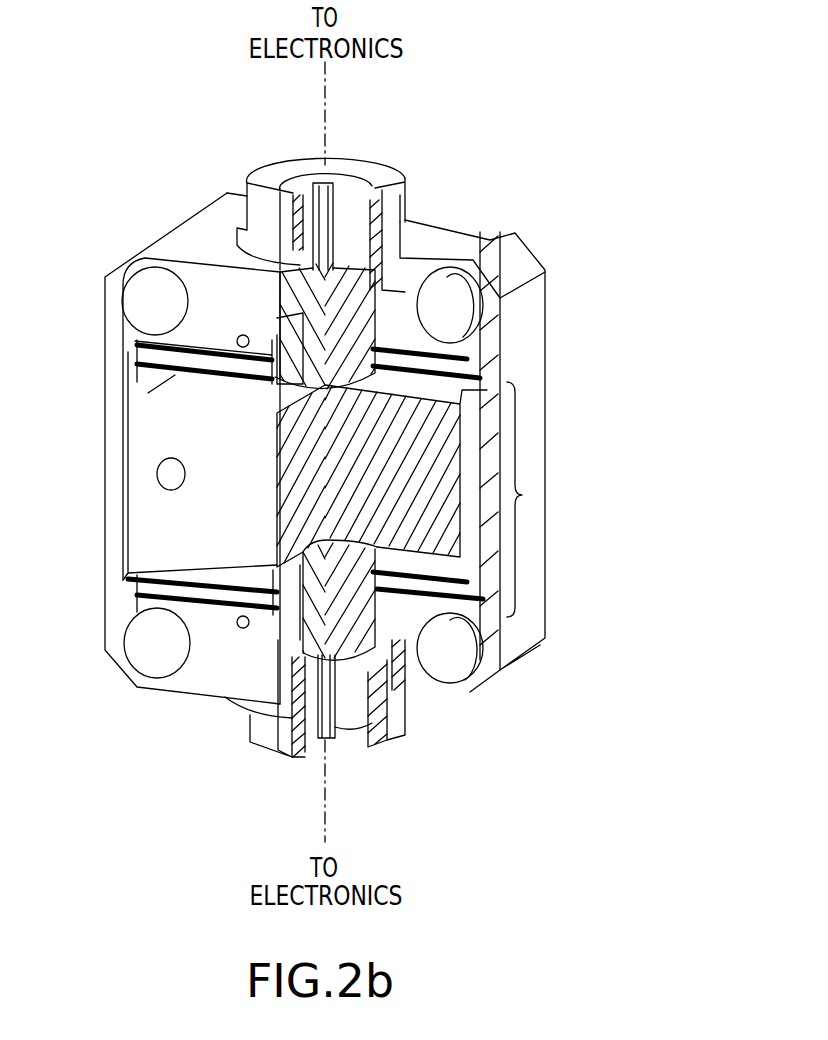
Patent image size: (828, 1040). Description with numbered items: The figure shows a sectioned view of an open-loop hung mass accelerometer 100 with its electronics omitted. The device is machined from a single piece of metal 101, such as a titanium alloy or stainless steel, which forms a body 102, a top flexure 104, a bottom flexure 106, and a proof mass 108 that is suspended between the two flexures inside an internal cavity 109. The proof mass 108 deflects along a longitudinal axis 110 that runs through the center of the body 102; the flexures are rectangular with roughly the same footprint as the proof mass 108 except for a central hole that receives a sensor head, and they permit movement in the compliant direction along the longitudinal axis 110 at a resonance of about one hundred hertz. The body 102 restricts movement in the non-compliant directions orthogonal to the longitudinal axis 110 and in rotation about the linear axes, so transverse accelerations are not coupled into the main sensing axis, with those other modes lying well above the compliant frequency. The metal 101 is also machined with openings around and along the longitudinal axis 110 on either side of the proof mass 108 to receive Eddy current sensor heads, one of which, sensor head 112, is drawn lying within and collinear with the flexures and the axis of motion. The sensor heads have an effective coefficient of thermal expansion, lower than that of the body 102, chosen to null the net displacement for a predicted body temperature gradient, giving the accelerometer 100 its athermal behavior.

The open-loop hung mass accelerometer 100 is at (565, 92).
The single piece of metal 101 is at (66, 165).
The body 102 is at (500, 222).
The top flexure 104 is at (295, 352).
The bottom flexure 106 is at (247, 624).
The proof mass 108 is at (437, 460).
The internal cavity 109 is at (523, 495).
The longitudinal axis 110 is at (300, 158).
The Eddy current sensor head 112 is at (370, 292).